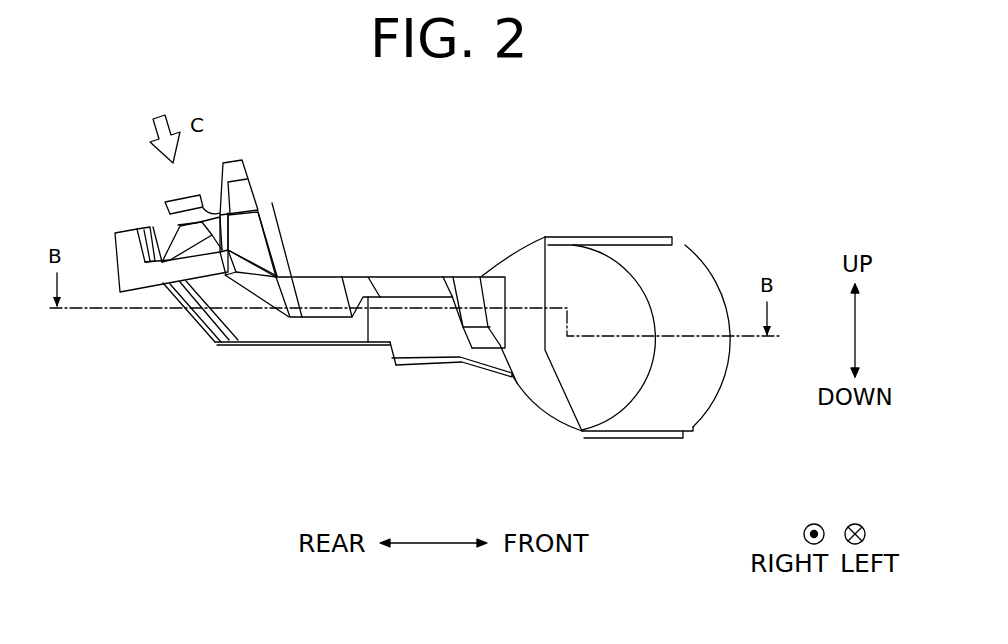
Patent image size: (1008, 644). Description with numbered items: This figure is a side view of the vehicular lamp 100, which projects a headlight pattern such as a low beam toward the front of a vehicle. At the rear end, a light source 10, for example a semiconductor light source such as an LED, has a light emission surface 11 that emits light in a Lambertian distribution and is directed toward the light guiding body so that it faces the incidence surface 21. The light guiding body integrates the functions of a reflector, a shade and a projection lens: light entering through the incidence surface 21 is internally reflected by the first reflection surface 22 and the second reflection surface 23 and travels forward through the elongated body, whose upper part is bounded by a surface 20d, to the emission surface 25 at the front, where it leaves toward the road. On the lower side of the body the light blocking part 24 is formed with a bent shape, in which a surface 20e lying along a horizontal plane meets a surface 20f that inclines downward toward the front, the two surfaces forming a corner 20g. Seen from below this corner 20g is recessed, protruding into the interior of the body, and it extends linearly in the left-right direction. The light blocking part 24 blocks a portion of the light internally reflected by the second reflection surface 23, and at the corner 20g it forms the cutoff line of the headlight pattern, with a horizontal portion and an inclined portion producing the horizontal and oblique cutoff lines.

The vehicular lamp 100 is at (753, 158).
The light source 10 is at (193, 195).
The light emission surface 11 is at (230, 202).
The incidence surface 21 is at (232, 230).
The first reflection surface 22 is at (157, 247).
The second reflection surface 23 is at (193, 322).
The light blocking part 24 is at (394, 336).
The emission surface 25 is at (732, 373).
The surface 20d is at (328, 277).
The surface 20e is at (313, 347).
The surface 20f is at (393, 363).
The corner 20g is at (390, 343).